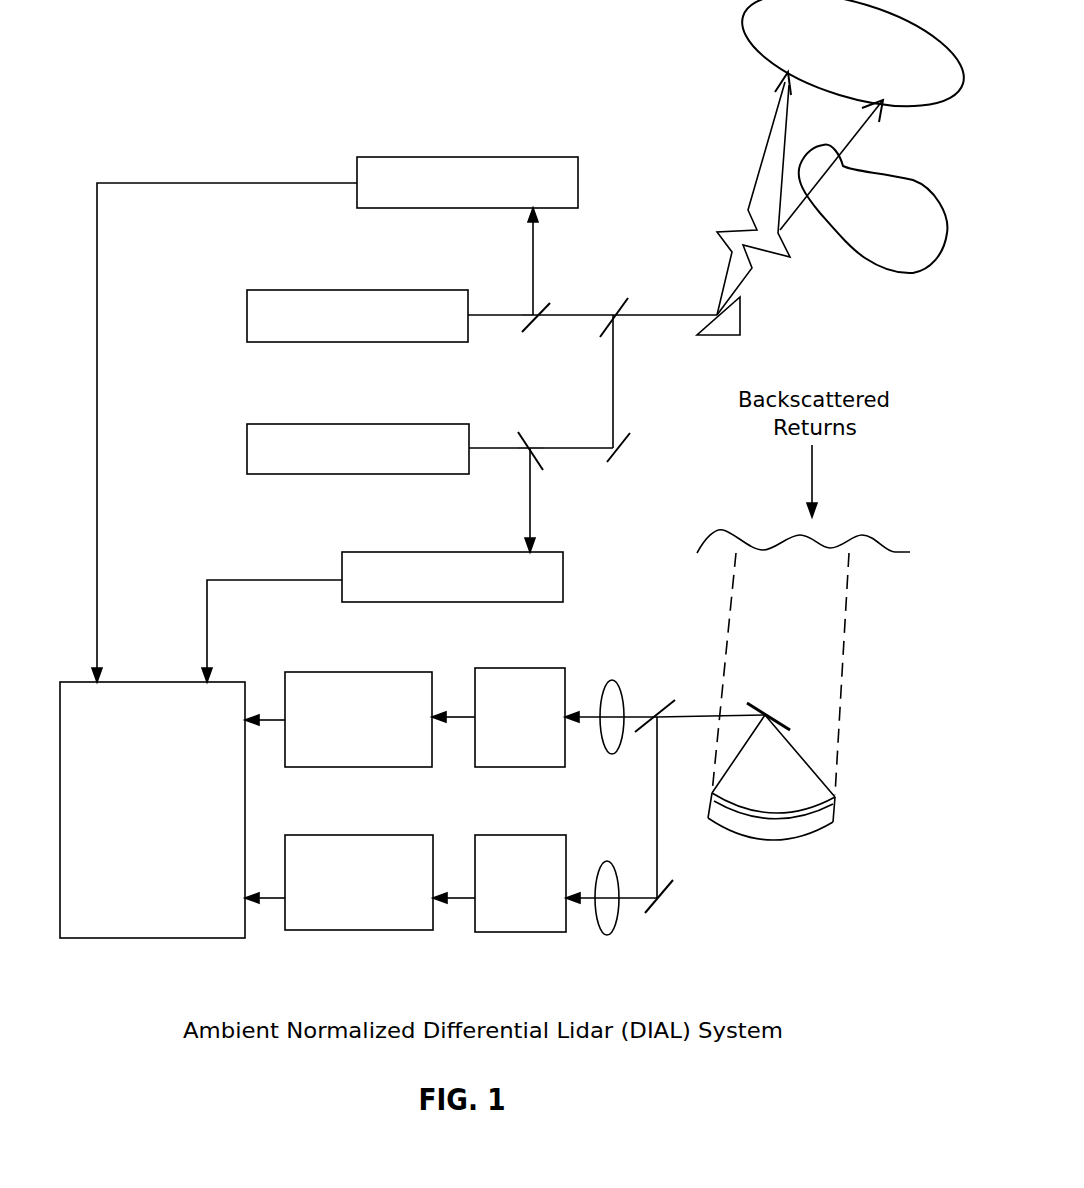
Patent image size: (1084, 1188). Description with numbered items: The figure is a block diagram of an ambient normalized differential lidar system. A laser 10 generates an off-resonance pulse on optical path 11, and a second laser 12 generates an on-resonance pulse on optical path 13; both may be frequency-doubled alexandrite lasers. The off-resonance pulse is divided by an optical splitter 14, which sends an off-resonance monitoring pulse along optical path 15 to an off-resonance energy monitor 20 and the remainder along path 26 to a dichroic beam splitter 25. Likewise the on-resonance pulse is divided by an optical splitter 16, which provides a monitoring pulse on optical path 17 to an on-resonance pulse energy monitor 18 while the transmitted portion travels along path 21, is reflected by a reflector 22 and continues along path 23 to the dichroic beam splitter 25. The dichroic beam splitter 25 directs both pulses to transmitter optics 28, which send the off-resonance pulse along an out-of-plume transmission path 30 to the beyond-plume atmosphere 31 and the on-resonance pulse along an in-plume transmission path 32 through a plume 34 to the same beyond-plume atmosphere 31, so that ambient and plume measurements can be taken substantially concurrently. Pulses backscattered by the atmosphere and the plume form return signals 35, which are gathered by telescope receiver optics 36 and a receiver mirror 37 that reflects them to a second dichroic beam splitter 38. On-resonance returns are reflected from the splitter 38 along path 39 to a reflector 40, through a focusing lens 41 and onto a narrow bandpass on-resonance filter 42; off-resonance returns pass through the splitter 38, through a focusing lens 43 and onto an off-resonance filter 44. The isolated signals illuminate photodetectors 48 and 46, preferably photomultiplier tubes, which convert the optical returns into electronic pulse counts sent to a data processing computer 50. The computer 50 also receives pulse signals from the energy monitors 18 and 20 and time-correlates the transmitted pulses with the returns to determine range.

The laser 10 is at (308, 291).
The optical path 11 is at (517, 315).
The laser 12 is at (320, 424).
The optical path 13 is at (480, 450).
The optical splitter 14 is at (520, 326).
The optical path 15 is at (535, 252).
The optical splitter 16 is at (520, 433).
The optical path 17 is at (527, 503).
The on-resonance pulse energy monitor 18 is at (565, 552).
The off-resonance energy monitor 20 is at (578, 158).
The path 21 is at (552, 450).
The beam combining mirror 22 is at (607, 460).
The path 23 is at (613, 390).
The dichroic beam splitter 25 is at (622, 315).
The path 26 is at (572, 315).
The transmitter optics 28 is at (710, 337).
The out-of-plume transmission path 30 is at (760, 153).
The beyond-plume atmosphere 31 is at (743, 20).
The in-plume transmission path 32 is at (782, 230).
The plume 34 is at (897, 277).
The return signals 35 is at (843, 663).
The receiver optics 36 is at (760, 840).
The receiver mirror 37 is at (747, 702).
The dichroic beam splitter 38 is at (660, 705).
The path 39 is at (655, 777).
The reflector 40 is at (647, 912).
The focusing lens 41 is at (612, 930).
The on-resonance filter 42 is at (538, 932).
The focusing lens 43 is at (608, 680).
The off-resonance filter 44 is at (517, 668).
The photodetector 46 is at (372, 932).
The photodetector 48 is at (360, 670).
The data processing computer 50 is at (153, 938).